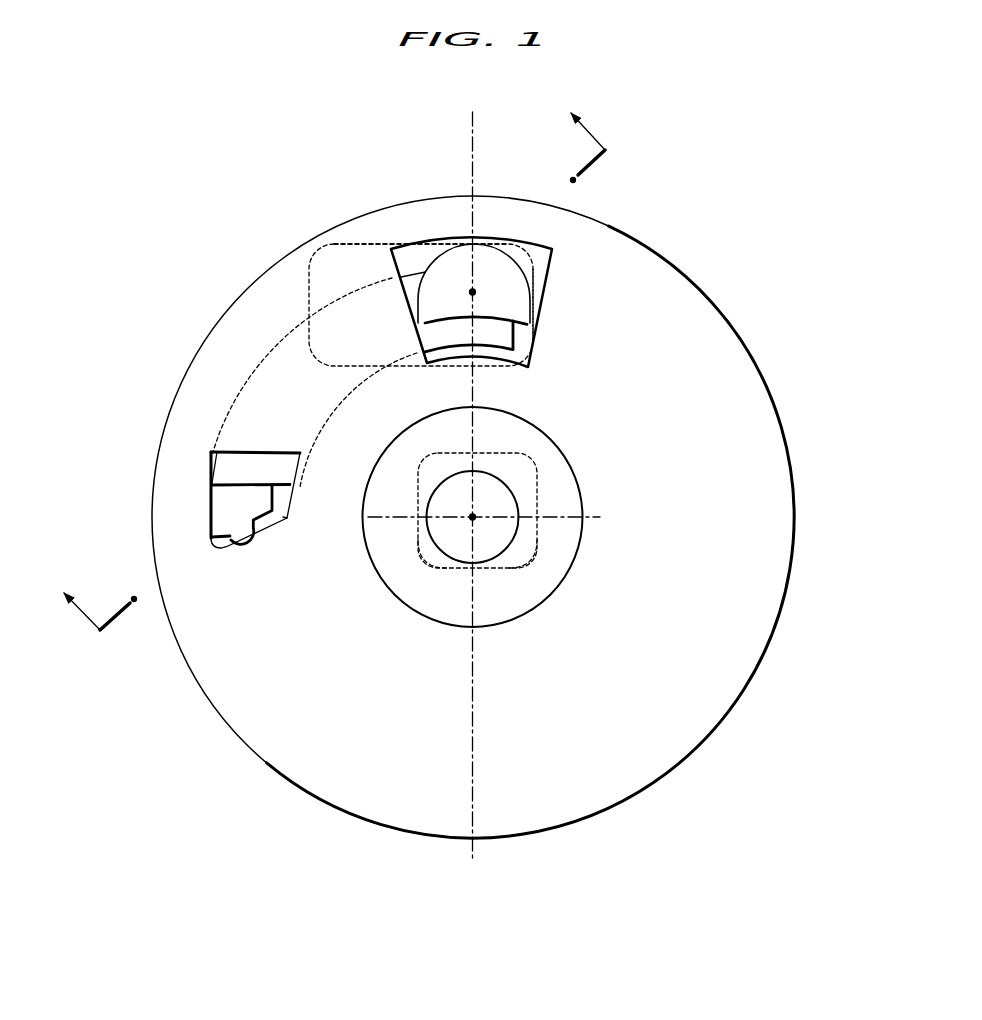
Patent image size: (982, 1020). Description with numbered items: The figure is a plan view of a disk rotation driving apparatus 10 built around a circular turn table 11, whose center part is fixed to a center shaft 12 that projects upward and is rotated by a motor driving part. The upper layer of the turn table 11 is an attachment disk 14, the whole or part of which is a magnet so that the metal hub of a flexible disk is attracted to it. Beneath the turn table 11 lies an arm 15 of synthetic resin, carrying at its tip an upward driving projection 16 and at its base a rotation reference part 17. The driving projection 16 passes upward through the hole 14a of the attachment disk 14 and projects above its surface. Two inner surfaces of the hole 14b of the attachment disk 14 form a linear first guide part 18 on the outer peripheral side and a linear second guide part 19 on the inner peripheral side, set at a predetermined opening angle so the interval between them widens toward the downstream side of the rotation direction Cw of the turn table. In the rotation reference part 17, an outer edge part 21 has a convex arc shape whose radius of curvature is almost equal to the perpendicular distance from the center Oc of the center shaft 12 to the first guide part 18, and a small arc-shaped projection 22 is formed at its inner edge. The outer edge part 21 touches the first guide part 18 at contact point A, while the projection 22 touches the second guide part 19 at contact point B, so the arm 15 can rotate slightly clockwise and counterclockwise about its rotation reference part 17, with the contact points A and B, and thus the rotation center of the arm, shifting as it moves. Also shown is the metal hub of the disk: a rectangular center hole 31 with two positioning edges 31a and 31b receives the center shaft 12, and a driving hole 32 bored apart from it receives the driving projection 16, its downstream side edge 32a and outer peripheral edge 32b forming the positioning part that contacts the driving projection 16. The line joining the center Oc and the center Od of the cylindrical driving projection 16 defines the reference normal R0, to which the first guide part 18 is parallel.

The disk rotation driving apparatus 10 is at (466, 474).
The turn table 11 is at (784, 642).
The center shaft 12 is at (453, 547).
The attachment disk 14 is at (708, 698).
The hole of the attachment disk 14a is at (536, 292).
The hole of the attachment disk 14b is at (228, 494).
The arm 15 is at (347, 403).
The driving projection 16 is at (507, 283).
The rotation reference part 17 is at (257, 500).
The first guide part 18 is at (211, 460).
The second guide part 19 is at (275, 518).
The outer edge part 21 is at (213, 472).
The projection 22 is at (237, 530).
The center hole 31 is at (533, 468).
The positioning edge 31a is at (430, 553).
The positioning edge 31b is at (500, 572).
The driving hole 32 is at (334, 243).
The side edge 32a is at (533, 323).
The outer peripheral edge 32b is at (443, 238).
The center of the center shaft Oc is at (472, 517).
The center of the driving projection Od is at (472, 292).
The reference normal R0 is at (474, 104).
The rotation direction of the turn table Cw is at (125, 423).
The contact point A is at (212, 515).
The contact point B is at (245, 540).